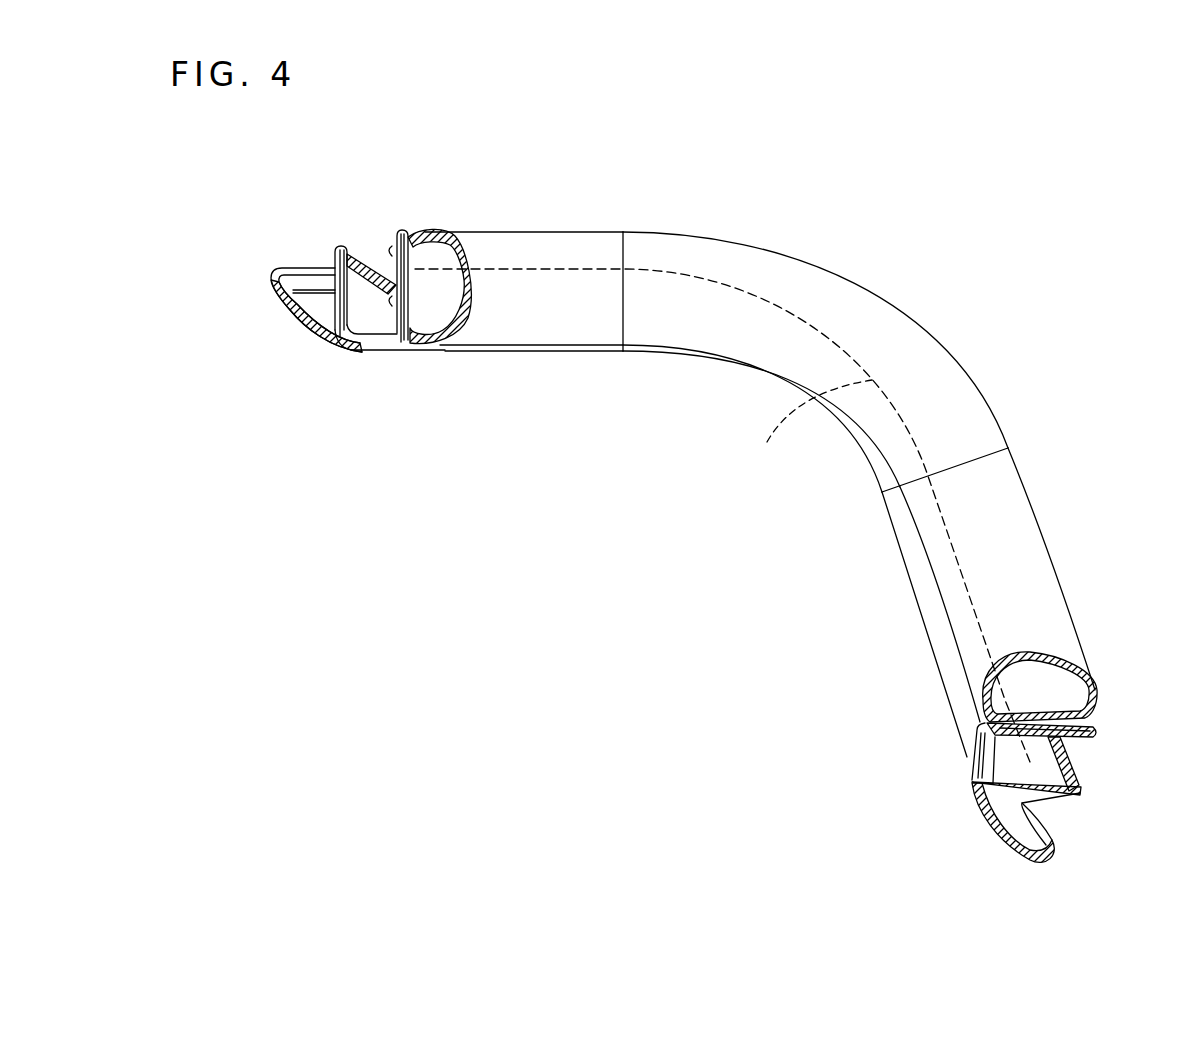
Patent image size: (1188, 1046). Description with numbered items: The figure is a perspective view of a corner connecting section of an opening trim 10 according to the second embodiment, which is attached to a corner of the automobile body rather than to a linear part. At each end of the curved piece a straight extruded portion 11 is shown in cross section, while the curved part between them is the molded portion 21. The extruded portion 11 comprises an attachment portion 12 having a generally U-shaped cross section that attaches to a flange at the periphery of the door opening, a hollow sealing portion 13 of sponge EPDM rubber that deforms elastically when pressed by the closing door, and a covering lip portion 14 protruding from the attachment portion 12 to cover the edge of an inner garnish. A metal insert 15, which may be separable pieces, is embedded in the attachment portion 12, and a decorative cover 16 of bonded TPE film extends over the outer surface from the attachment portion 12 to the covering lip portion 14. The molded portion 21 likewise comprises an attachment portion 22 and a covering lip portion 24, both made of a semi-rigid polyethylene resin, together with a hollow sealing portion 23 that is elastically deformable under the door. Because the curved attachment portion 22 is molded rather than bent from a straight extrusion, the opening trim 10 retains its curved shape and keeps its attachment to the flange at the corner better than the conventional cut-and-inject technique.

The opening trim 10 is at (509, 196).
The extruded portion 11 is at (535, 371).
The attachment portion 12 is at (403, 342).
The hollow sealing portion 13 is at (438, 336).
The covering lip portion 14 is at (295, 320).
The metal insert 15 is at (350, 338).
The decorative cover 16 is at (315, 333).
The molded portion 21 is at (900, 297).
The attachment portion 22 is at (760, 373).
The hollow sealing portion 23 is at (950, 395).
The covering lip portion 24 is at (808, 430).